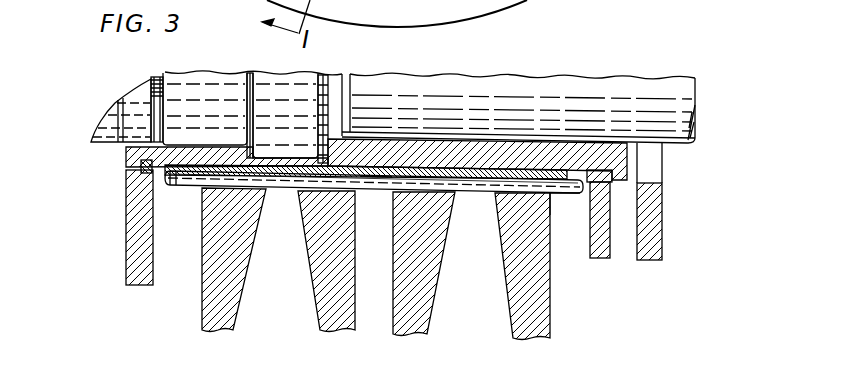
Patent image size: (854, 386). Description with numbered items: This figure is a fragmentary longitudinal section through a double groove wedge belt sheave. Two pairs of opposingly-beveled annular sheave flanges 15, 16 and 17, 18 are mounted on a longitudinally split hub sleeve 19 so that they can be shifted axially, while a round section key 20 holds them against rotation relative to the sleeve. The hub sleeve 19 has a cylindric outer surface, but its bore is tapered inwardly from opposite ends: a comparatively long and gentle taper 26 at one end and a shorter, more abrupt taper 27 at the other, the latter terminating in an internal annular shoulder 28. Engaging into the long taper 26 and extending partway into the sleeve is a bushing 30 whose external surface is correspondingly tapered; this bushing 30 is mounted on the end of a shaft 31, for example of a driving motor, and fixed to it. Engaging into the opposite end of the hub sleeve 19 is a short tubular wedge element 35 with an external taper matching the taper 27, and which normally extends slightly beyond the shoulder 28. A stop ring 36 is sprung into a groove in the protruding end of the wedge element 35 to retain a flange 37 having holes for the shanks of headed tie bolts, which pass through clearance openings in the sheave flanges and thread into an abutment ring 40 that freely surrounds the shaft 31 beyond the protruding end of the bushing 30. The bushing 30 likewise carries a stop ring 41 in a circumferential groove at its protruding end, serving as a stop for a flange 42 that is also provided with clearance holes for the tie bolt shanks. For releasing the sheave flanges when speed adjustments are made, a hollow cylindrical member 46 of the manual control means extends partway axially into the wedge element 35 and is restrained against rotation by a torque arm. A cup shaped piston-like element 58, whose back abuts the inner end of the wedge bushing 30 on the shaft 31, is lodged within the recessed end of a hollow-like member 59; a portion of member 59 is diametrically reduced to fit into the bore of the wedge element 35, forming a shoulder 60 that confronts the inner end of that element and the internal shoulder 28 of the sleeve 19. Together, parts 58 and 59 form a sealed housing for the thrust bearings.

The sheave flange 15 is at (212, 329).
The sheave flange 16 is at (336, 330).
The sheave flange 17 is at (408, 334).
The sheave flange 18 is at (528, 339).
The hub sleeve 19 is at (373, 179).
The key 20 is at (475, 191).
The taper 26 is at (533, 199).
The taper 27 is at (196, 181).
The internal annular shoulder 28 is at (241, 176).
The bushing 30 is at (622, 161).
The shaft 31 is at (544, 85).
The wedge element 35 is at (126, 157).
The stop ring 36 is at (145, 173).
The flange 37 is at (128, 224).
The abutment ring 40 is at (648, 262).
The stop ring 41 is at (606, 186).
The flange 42 is at (597, 260).
The hollow cylindrical member 46 is at (109, 112).
The cup shaped piston-like element 58 is at (327, 86).
The hollow-like member 59 is at (300, 85).
The shoulder 60 is at (250, 95).